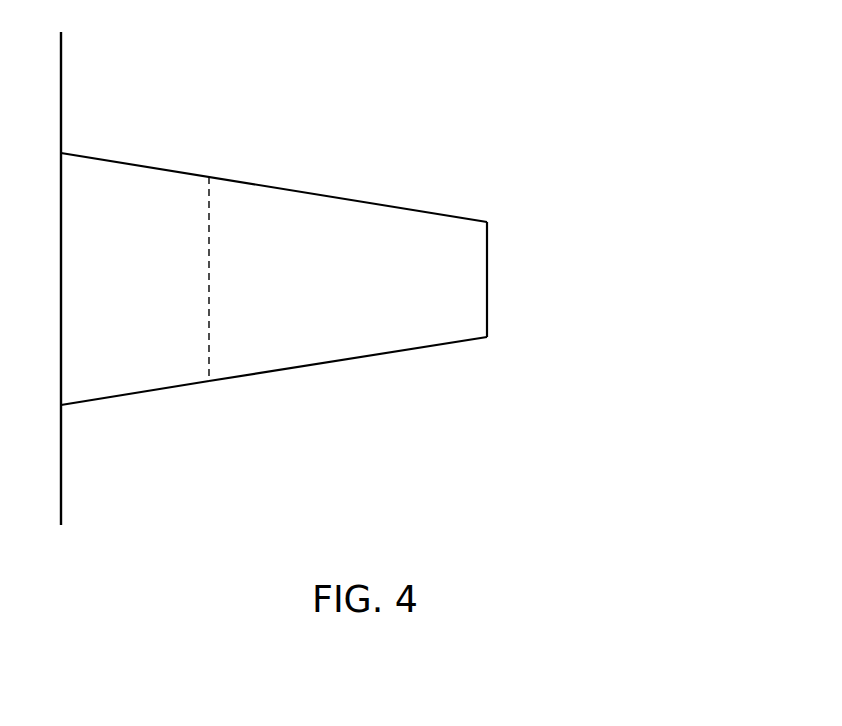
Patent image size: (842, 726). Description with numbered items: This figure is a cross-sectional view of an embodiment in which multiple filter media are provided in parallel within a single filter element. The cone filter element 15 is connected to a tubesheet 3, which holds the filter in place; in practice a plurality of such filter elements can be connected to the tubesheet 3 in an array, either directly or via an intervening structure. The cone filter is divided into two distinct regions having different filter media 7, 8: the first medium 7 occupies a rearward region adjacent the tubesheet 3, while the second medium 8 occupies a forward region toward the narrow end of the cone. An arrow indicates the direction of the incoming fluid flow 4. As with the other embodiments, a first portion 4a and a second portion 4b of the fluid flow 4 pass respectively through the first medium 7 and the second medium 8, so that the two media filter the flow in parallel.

The tubesheet 3 is at (61, 65).
The first portion of the fluid flow 4a is at (152, 108).
The second portion of the fluid flow 4b is at (448, 158).
The first filter medium 7 is at (152, 278).
The second filter medium 8 is at (346, 278).
The cone filter element 15 is at (313, 192).
The fluid flow 4 is at (572, 279).